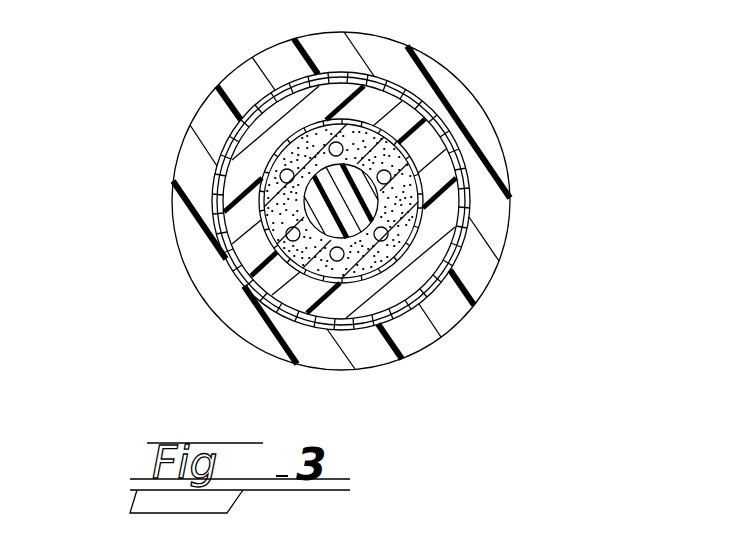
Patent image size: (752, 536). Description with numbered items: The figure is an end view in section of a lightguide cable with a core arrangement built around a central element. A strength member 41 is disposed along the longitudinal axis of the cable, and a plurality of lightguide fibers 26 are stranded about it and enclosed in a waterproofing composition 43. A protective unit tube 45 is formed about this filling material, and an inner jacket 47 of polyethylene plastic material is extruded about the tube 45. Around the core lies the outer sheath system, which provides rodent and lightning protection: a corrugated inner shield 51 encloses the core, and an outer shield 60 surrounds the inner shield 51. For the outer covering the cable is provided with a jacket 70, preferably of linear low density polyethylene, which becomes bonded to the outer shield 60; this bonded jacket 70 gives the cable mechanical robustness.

The jacket 70 is at (376, 47).
The outer shield 60 is at (342, 79).
The inner shield 51 is at (385, 118).
The inner jacket 47 is at (377, 294).
The protective unit tube 45 is at (393, 262).
The waterproofing composition 43 is at (368, 152).
The lightguide fibers 26 is at (388, 234).
The strength member 41 is at (358, 200).